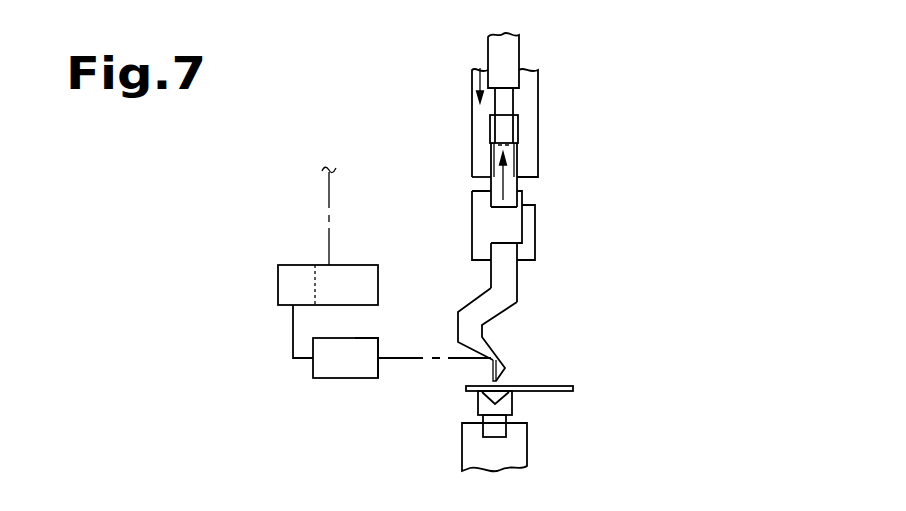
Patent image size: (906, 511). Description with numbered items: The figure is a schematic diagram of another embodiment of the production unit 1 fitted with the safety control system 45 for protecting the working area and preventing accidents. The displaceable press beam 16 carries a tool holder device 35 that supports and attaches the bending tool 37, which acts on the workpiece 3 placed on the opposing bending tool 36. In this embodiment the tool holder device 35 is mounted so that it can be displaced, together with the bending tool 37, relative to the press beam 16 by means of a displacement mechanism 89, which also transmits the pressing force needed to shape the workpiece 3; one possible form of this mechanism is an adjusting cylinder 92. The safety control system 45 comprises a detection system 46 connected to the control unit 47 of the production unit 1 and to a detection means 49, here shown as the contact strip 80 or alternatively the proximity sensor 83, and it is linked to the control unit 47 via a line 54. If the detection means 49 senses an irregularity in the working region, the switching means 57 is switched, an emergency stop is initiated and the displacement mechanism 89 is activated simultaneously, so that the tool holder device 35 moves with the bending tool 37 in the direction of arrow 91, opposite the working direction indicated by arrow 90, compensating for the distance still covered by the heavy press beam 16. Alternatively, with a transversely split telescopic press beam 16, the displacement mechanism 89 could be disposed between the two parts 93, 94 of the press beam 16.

The production unit 1 is at (632, 70).
The workpiece 3 is at (495, 380).
The press beam 16 is at (580, 147).
The tool holder device 35 is at (515, 232).
The bending tool 36 is at (512, 399).
The bending tool 37 is at (487, 352).
The safety control system 45 is at (300, 382).
The detection system 46 is at (347, 370).
The control unit 47 is at (303, 272).
The detection means 49 is at (273, 372).
The line 54 is at (292, 327).
The switching means 57 is at (367, 362).
The contact strip 80 is at (575, 378).
The proximity sensor 83 is at (487, 362).
The displacement mechanism 89 is at (540, 142).
The arrow 90 is at (481, 68).
The arrow 91 is at (507, 190).
The adjusting cylinder 92 is at (508, 53).
The part of the press beam 93 is at (477, 135).
The part of the press beam 94 is at (497, 187).